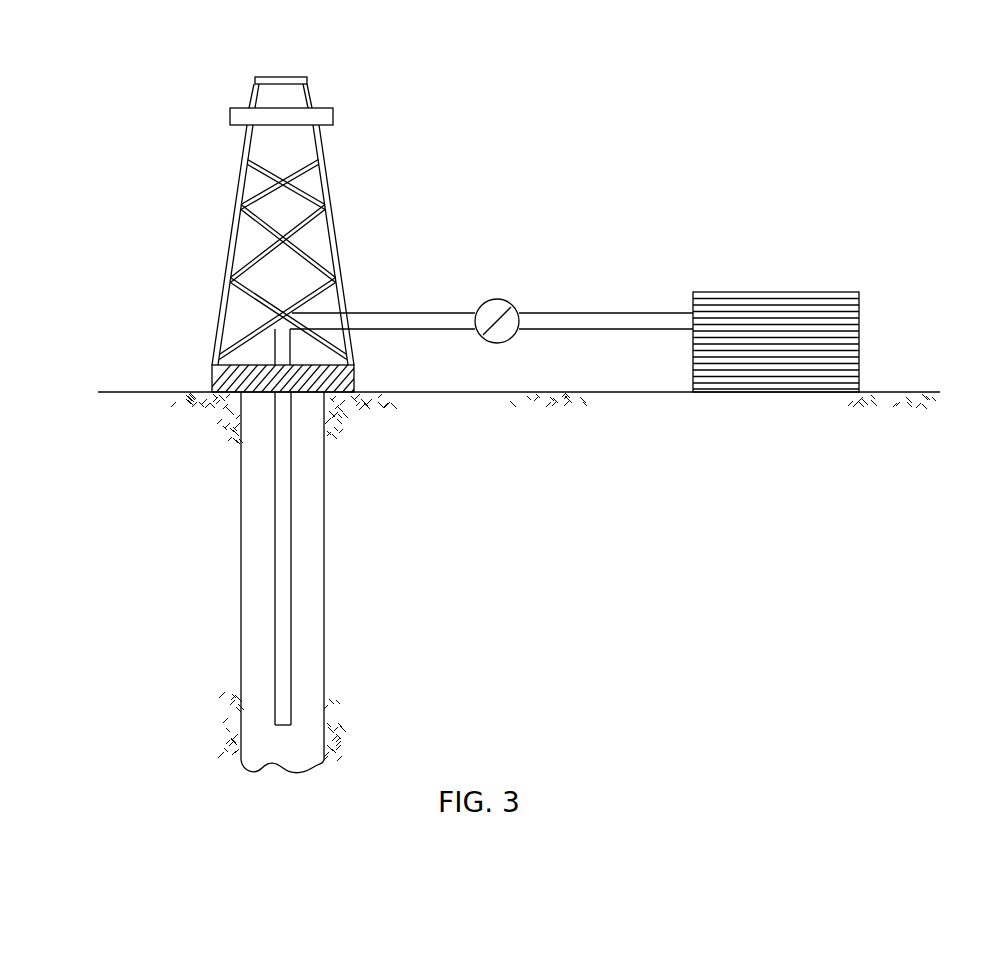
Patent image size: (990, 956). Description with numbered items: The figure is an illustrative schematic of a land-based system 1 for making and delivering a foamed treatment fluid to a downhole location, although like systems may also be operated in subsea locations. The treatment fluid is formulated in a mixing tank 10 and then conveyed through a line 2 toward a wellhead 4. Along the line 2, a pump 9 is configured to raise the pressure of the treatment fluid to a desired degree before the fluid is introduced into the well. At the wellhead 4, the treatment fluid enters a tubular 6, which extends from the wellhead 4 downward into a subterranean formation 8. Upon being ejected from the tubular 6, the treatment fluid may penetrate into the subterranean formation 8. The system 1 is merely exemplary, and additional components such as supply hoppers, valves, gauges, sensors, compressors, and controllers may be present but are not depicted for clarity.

The system 1 is at (101, 113).
The line 2 is at (410, 313).
The wellhead 4 is at (210, 378).
The tubular 6 is at (291, 504).
The subterranean formation 8 is at (143, 563).
The pump 9 is at (505, 300).
The mixing tank 10 is at (848, 291).